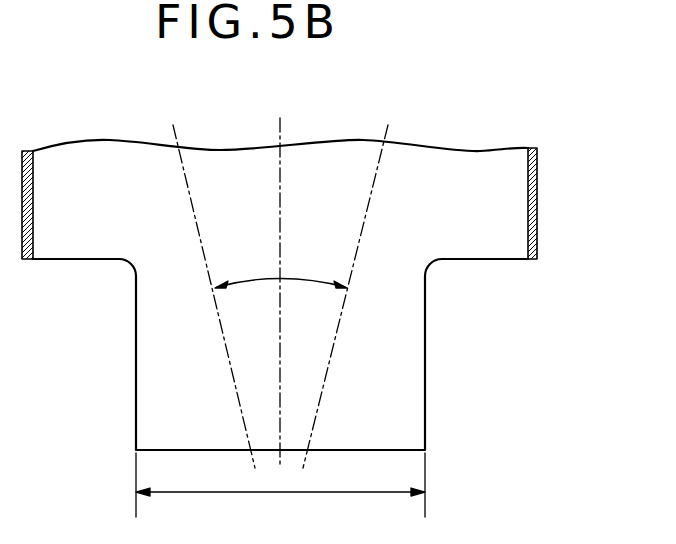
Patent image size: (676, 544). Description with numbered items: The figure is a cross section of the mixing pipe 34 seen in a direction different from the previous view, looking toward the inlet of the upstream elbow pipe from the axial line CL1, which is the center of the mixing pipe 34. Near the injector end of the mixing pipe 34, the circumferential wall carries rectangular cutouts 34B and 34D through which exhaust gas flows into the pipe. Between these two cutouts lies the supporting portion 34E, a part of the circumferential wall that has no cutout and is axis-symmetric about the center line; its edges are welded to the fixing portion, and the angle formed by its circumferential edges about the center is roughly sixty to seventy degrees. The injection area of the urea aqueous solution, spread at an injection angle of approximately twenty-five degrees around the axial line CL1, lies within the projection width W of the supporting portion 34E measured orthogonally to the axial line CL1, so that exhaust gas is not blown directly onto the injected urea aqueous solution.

The mixing pipe 34 is at (302, 258).
The rectangular cutout 34D is at (72, 260).
The rectangular cutout 34B is at (494, 260).
The supporting portion 34E is at (400, 421).
The axial line CL1 is at (283, 137).
The projection width W is at (280, 486).